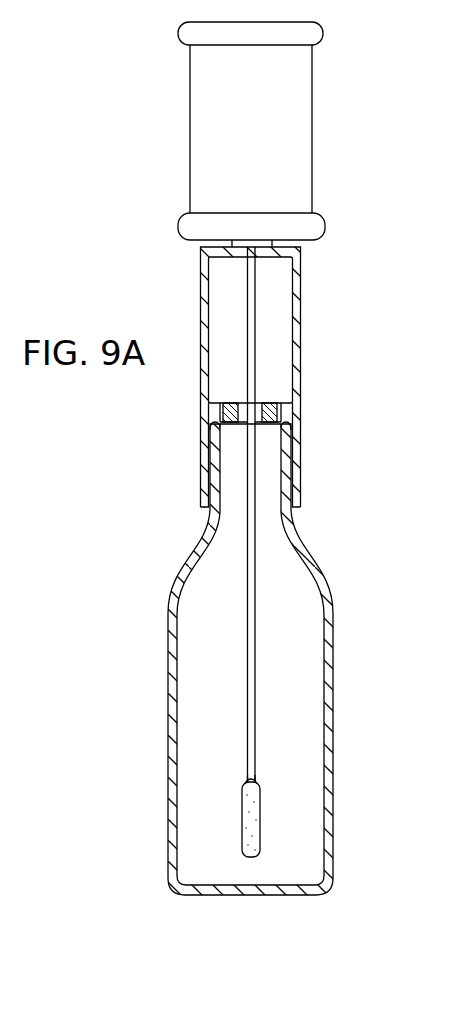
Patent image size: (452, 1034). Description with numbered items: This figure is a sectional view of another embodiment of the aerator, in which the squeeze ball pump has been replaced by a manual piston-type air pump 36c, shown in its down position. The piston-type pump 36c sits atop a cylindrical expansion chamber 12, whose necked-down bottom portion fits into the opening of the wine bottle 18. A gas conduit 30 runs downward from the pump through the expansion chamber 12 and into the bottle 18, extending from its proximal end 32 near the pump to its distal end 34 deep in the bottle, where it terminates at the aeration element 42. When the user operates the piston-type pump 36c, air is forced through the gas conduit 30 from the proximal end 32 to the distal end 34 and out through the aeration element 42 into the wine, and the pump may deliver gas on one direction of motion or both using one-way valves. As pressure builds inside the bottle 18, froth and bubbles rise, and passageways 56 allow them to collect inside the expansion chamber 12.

The manual piston-type air pump 36c is at (298, 111).
The expansion chamber 12 is at (278, 330).
The passageways 56 is at (270, 410).
The wine bottle 18 is at (333, 683).
The gas conduit 30 is at (257, 647).
The proximal end 32 is at (256, 306).
The distal end 34 is at (251, 768).
The aeration element 42 is at (255, 823).